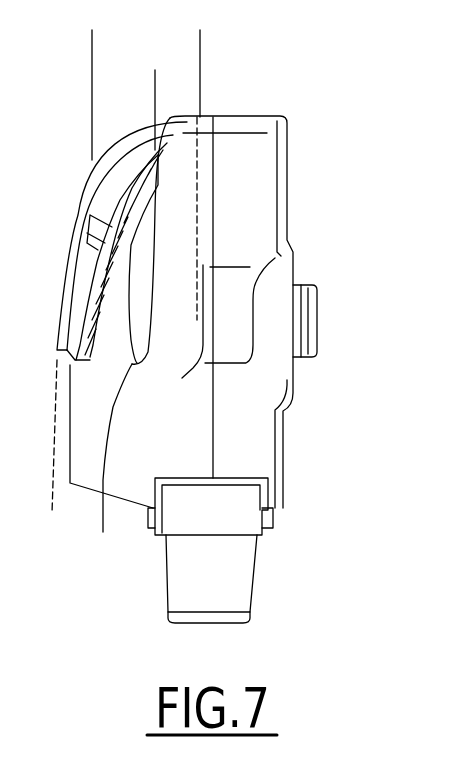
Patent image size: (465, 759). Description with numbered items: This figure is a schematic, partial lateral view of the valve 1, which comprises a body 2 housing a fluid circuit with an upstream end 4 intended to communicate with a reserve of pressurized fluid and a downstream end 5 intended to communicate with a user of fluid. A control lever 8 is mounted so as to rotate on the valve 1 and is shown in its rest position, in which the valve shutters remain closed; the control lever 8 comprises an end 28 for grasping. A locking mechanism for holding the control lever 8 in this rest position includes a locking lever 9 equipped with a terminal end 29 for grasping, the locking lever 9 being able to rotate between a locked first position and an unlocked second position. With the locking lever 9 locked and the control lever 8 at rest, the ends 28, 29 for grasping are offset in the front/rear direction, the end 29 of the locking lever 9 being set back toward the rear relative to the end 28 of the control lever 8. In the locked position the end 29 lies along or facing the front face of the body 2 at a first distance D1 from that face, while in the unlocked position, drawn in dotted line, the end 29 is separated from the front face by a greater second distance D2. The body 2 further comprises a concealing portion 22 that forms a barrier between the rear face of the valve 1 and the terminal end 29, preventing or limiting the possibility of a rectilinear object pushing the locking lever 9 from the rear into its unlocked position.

The valve 1 is at (356, 372).
The body 2 is at (262, 450).
The upstream end 4 is at (227, 630).
The downstream end 5 is at (318, 304).
The control lever 8 is at (70, 255).
The locking lever 9 is at (127, 268).
The concealing portion 22 is at (257, 342).
The end for grasping 28 is at (59, 343).
The end for grasping 29 is at (79, 464).
The first distance D1 is at (215, 78).
The second distance D2 is at (219, 40).